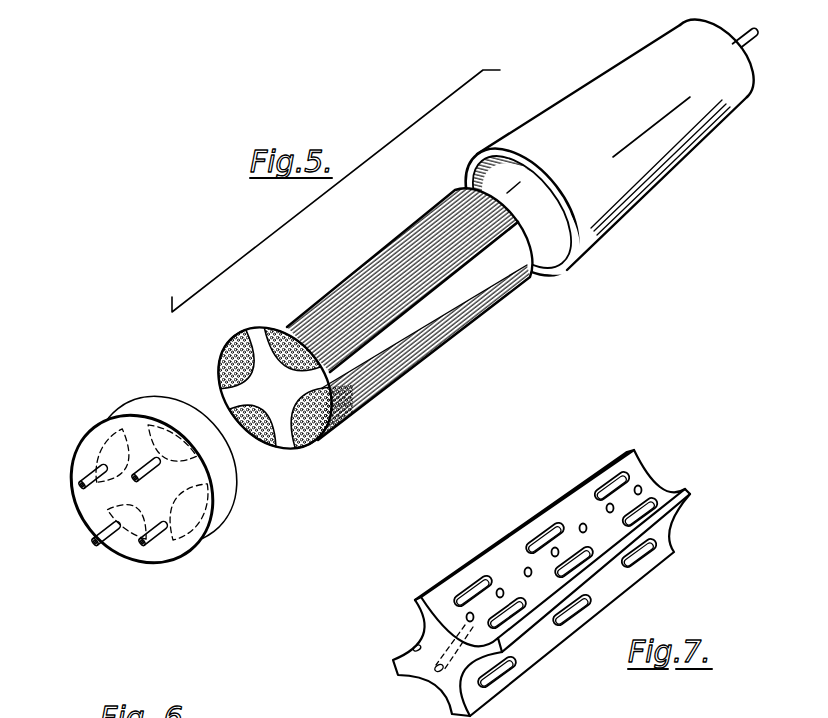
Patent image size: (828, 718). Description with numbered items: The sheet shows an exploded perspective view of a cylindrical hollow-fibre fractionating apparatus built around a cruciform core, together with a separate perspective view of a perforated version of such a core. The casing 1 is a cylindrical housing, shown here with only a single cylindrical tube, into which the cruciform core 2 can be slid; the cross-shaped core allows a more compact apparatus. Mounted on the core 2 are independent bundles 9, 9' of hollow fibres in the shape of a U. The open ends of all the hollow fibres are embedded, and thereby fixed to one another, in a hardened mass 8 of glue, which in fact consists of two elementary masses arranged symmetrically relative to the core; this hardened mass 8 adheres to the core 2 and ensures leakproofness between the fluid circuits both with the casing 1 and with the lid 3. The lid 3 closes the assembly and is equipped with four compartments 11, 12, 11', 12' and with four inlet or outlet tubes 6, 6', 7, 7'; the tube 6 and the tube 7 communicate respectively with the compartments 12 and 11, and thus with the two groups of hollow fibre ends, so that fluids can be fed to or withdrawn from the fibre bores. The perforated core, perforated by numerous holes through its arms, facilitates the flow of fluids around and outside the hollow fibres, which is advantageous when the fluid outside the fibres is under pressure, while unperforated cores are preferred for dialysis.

The casing 1 is at (655, 186).
The cruciform core 2 is at (370, 329).
The lid 3 is at (159, 483).
The inlet or outlet tube 6 is at (92, 551).
The inlet or outlet tube 6' is at (153, 568).
The inlet or outlet tube 7 is at (146, 416).
The inlet or outlet tube 7' is at (72, 479).
The hardened mass 8 is at (333, 417).
The bundle of hollow fibres 9 is at (424, 352).
The bundle of hollow fibres 9' is at (402, 282).
The compartment 11 is at (172, 405).
The compartment 11' is at (82, 441).
The compartment 12 is at (122, 560).
The compartment 12' is at (195, 550).